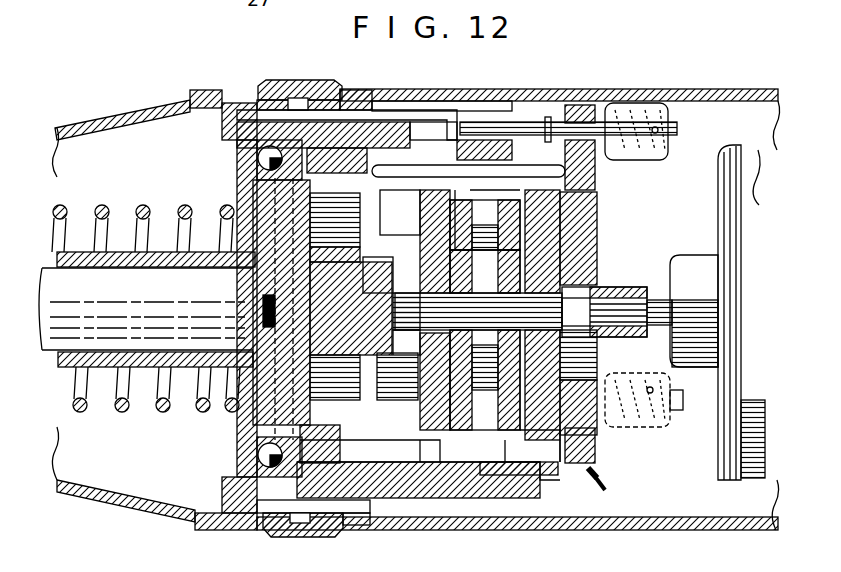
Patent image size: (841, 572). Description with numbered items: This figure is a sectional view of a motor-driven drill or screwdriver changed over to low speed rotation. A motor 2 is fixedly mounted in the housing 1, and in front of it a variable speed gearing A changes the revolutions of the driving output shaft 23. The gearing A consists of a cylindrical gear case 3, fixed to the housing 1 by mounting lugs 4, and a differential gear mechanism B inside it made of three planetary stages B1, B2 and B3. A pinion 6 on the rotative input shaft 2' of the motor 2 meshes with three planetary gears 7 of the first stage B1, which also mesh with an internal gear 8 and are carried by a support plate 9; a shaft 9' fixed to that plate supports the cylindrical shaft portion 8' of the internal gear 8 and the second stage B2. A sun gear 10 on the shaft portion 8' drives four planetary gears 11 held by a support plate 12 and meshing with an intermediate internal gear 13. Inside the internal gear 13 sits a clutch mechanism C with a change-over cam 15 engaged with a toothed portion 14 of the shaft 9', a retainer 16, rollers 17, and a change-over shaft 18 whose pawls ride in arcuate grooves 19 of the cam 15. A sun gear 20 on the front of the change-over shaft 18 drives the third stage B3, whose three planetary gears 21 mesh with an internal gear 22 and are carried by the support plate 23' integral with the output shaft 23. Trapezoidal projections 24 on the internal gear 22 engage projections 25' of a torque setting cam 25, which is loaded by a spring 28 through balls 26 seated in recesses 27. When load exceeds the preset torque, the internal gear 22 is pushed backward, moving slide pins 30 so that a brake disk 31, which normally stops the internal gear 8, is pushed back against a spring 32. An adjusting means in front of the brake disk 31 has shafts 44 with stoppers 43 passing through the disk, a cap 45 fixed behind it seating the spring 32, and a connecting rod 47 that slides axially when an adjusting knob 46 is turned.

The housing 1 is at (705, 92).
The motor 2 is at (741, 295).
The rotative input shaft 2' is at (682, 311).
The gear case 3 is at (455, 478).
The mounting lugs 4 is at (365, 125).
The pinion 6 is at (641, 287).
The planetary gears 7 is at (600, 210).
The internal gear 8 is at (530, 475).
The cylindrical shaft portion 8' is at (478, 311).
The support plate 9 is at (578, 382).
The shaft 9' is at (497, 377).
The sun gear 10 is at (520, 270).
The planetary gears 11 is at (487, 490).
The support plate 12 is at (535, 478).
The intermediate internal gear 13 is at (460, 190).
The toothed portion 14 is at (420, 250).
The change-over cam 15 is at (428, 390).
The retainer 16 is at (392, 300).
The rollers 17 is at (400, 390).
The change-over shaft 18 is at (357, 310).
The arcuate grooves 19 is at (470, 228).
The sun gear 20 is at (393, 340).
The planetary gears 21 is at (332, 378).
The internal gear 22 is at (352, 466).
The driving output shaft 23 is at (147, 264).
The support plate 23' is at (400, 212).
The projections 24 is at (374, 146).
The torque setting cam 25 is at (303, 537).
The projections 25' is at (361, 536).
The balls 26 is at (258, 158).
The recesses 27 is at (255, 185).
The spring 28 is at (128, 413).
The slide pins 30 is at (428, 165).
The brake disk 31 is at (596, 170).
The spring 32 is at (650, 160).
The stopper 43 is at (560, 117).
The shafts 44 is at (525, 122).
The cap 45 is at (638, 103).
The adjusting knob 46 is at (275, 80).
The connecting rod 47 is at (405, 110).
The variable speed gearing A is at (604, 489).
The differential gear mechanism B is at (612, 250).
The first-stage planetary gear mechanism B1 is at (565, 475).
The second planetary gear mechanism B2 is at (512, 476).
The third planetary gear mechanism B3 is at (428, 476).
The clutch mechanism C is at (325, 446).